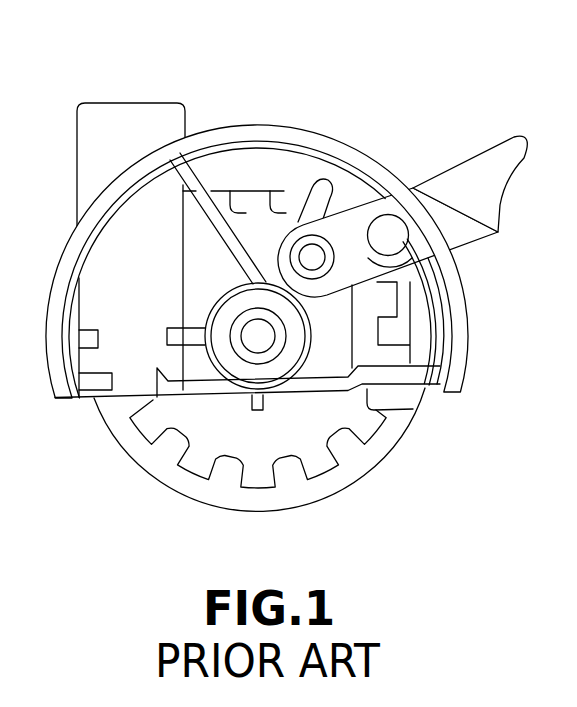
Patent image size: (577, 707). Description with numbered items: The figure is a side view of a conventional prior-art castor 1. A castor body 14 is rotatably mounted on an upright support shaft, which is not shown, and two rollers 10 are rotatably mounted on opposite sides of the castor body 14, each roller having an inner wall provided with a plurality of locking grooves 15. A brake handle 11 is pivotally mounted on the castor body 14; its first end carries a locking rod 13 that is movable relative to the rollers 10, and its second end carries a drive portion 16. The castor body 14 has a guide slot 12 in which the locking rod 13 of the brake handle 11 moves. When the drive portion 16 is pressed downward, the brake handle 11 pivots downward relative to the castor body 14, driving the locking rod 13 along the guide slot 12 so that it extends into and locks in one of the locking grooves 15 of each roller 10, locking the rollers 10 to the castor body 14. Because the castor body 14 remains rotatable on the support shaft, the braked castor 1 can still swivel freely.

The castor 1 is at (403, 92).
The roller 10 is at (393, 428).
The brake handle 11 is at (452, 170).
The guide slot 12 is at (312, 203).
The locking rod 13 is at (311, 256).
The castor body 14 is at (458, 310).
The locking groove 15 is at (320, 462).
The drive portion 16 is at (503, 180).